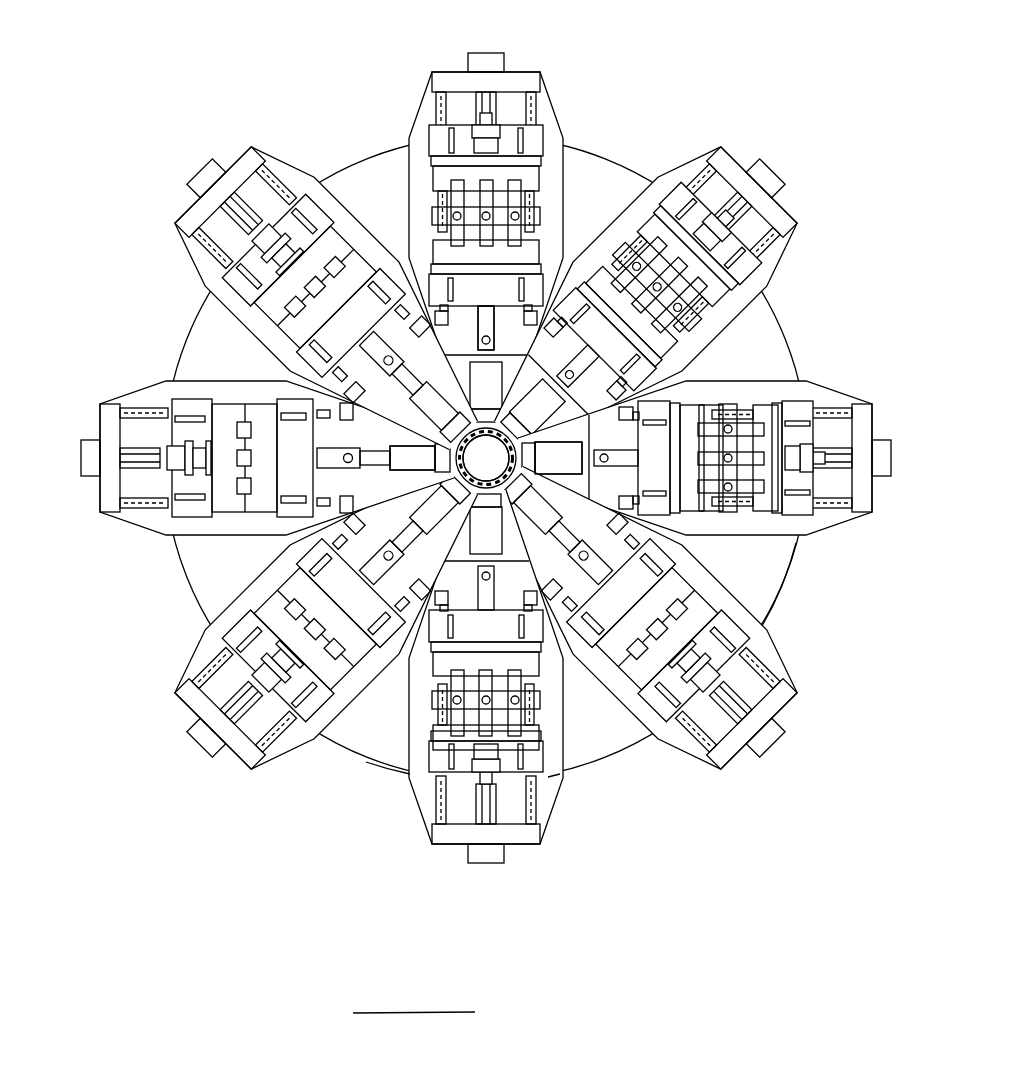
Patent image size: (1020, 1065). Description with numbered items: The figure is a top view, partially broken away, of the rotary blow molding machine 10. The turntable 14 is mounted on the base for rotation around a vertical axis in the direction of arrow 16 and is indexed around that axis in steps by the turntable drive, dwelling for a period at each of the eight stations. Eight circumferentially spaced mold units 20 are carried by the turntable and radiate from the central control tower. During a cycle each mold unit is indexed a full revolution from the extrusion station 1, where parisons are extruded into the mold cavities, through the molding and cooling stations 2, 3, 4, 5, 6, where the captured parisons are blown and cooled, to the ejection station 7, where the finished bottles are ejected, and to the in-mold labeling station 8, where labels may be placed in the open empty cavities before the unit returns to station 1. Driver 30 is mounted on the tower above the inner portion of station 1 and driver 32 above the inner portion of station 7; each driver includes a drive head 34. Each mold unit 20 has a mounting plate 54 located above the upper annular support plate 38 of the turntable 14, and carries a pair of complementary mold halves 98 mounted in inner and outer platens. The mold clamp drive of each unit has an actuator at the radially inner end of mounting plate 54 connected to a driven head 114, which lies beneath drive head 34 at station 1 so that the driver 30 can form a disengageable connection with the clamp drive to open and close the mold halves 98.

The rotary blow molding machine 10 is at (205, 95).
The turntable 14 is at (491, 455).
The arrow 16 is at (880, 298).
The mold unit 20 is at (491, 455).
The driver 30 is at (575, 448).
The driver 32 is at (488, 353).
The drive head 34 is at (486, 458).
The upper annular support plate 38 is at (360, 760).
The mounting plate 54 is at (552, 782).
The mold halves 98 is at (693, 412).
The driven head 114 is at (432, 511).
The extrusion station 1 is at (929, 466).
The molding and cooling station 2 is at (811, 786).
The molding and cooling station 3 is at (493, 908).
The molding and cooling station 4 is at (178, 786).
The molding and cooling station 5 is at (71, 466).
The molding and cooling station 6 is at (176, 176).
The ejection station 7 is at (499, 31).
The in-mold labeling station 8 is at (806, 150).